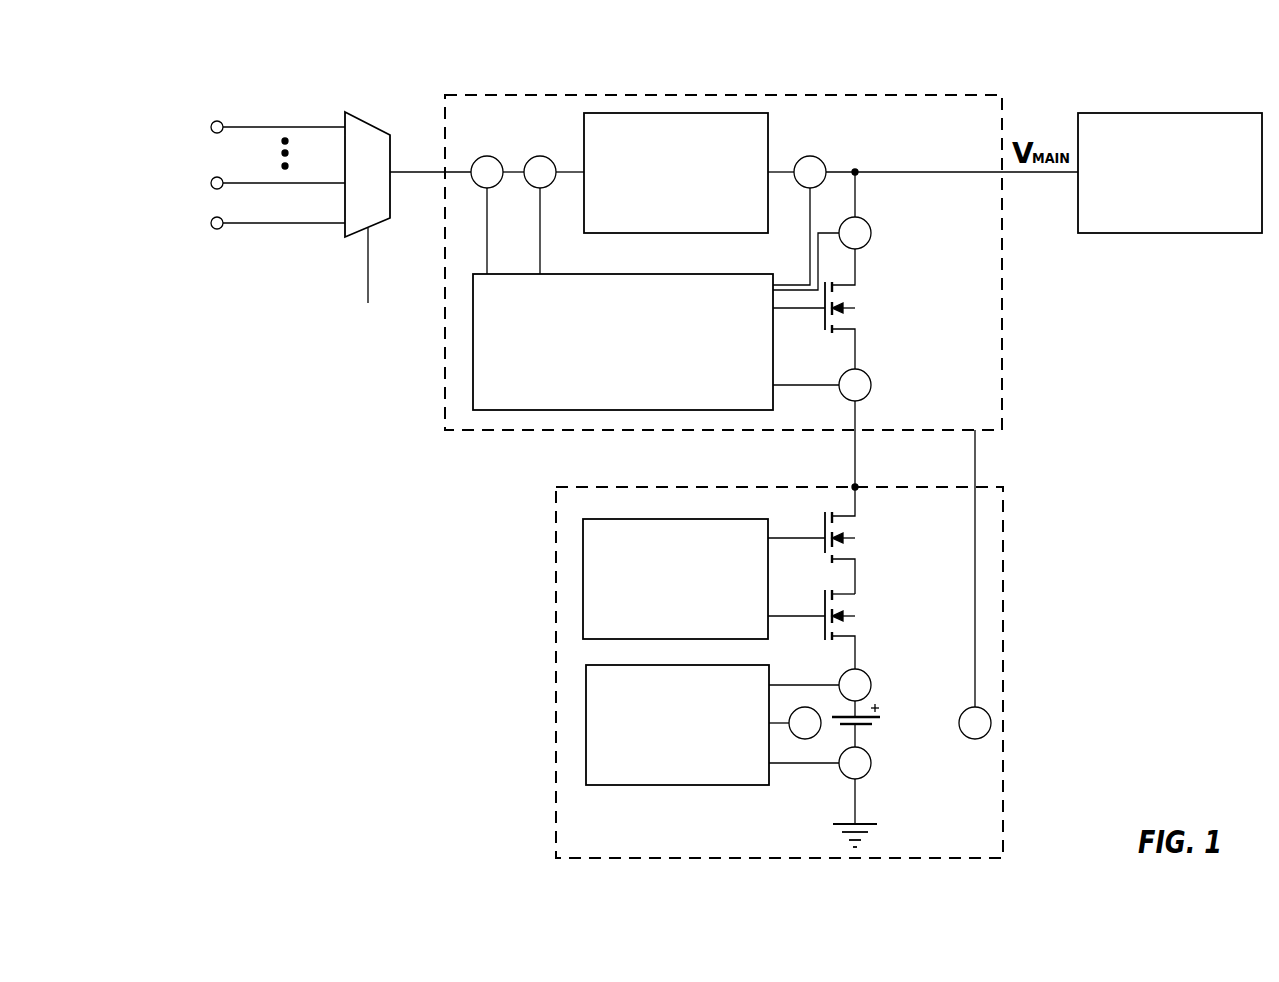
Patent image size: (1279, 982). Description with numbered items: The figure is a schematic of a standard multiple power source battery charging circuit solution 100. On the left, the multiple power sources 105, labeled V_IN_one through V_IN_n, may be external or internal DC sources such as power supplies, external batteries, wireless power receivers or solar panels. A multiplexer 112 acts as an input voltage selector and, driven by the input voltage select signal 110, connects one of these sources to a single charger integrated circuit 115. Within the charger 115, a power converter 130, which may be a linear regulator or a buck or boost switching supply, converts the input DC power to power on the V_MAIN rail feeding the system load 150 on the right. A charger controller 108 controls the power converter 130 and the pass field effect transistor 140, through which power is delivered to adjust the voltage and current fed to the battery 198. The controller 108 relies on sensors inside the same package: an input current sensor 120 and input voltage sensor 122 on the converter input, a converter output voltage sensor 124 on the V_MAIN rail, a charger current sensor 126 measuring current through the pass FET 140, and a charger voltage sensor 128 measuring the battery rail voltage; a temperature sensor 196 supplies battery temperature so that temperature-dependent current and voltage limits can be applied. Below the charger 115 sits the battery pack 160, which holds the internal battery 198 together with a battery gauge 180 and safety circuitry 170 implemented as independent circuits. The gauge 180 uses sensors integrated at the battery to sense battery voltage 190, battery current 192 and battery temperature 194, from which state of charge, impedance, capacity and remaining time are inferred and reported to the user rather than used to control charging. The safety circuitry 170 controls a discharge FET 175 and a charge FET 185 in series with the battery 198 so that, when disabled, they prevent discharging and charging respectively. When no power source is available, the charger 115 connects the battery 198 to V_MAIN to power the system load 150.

The circuit solution 100 is at (236, 90).
The multiple power sources 105 is at (170, 242).
The input voltage select signal 110 is at (357, 266).
The multiplexer 112 is at (381, 200).
The charger integrated circuit 115 is at (497, 432).
The input current sensor 120 is at (476, 154).
The input voltage sensor 122 is at (529, 154).
The converter output voltage sensor 124 is at (799, 155).
The charger current sensor 126 is at (868, 244).
The charger voltage sensor 128 is at (869, 393).
The power converter 130 is at (689, 198).
The charger controller 108 is at (636, 368).
The pass field effect transistor 140 is at (872, 310).
The system load 150 is at (1183, 198).
The battery pack 160 is at (556, 788).
The safety circuitry 170 is at (689, 605).
The discharge FET 175 is at (872, 540).
The charge FET 185 is at (872, 618).
The battery gauge 180 is at (690, 751).
The battery voltage 190 is at (871, 688).
The battery current 192 is at (871, 768).
The battery temperature 194 is at (800, 739).
The temperature sensor 196 is at (961, 735).
The internal battery 198 is at (866, 724).